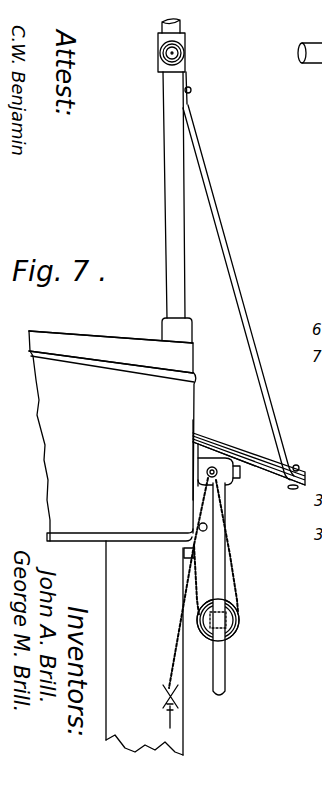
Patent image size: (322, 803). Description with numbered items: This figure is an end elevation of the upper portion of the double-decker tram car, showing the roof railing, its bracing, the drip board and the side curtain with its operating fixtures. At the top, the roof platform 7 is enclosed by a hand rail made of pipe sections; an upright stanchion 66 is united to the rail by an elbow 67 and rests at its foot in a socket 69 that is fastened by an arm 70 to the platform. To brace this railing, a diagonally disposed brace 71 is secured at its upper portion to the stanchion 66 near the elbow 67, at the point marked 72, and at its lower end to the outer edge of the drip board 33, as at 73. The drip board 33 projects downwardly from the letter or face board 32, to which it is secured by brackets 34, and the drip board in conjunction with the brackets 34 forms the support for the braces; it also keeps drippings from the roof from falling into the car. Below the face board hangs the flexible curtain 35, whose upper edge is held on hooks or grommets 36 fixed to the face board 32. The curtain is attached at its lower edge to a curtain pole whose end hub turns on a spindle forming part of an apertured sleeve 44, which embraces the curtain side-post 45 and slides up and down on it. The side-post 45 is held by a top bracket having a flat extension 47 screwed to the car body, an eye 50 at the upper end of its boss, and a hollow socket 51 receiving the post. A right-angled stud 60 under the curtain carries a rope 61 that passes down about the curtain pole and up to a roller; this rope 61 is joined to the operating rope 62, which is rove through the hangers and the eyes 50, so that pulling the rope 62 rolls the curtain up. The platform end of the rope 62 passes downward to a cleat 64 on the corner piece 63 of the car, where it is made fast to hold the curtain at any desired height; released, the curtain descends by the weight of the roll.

The roof platform 7 is at (187, 362).
The letter or face board 32 is at (207, 408).
The drip board 33 is at (235, 452).
The brackets 34 is at (229, 491).
The curtain 35 is at (200, 588).
The hooks or grommets 36 is at (208, 527).
The apertured sleeve 44 is at (243, 612).
The curtain side-posts 45 is at (217, 547).
The flat extension 47 is at (193, 476).
The eye 50 is at (220, 446).
The hollow socket 51 is at (218, 493).
The right-angled stud 60 is at (184, 553).
The rope 61 is at (240, 561).
The rope 62 is at (178, 637).
The corner piece 63 is at (144, 648).
The cleat 64 is at (175, 720).
The stanchions 66 is at (167, 210).
The elbow 67 is at (187, 66).
The sockets 69 is at (162, 323).
The arms 70 is at (133, 335).
The diagonally disposed braces 71 is at (240, 308).
The upper brace attachment 72 is at (191, 93).
The lower brace attachment 73 is at (300, 467).